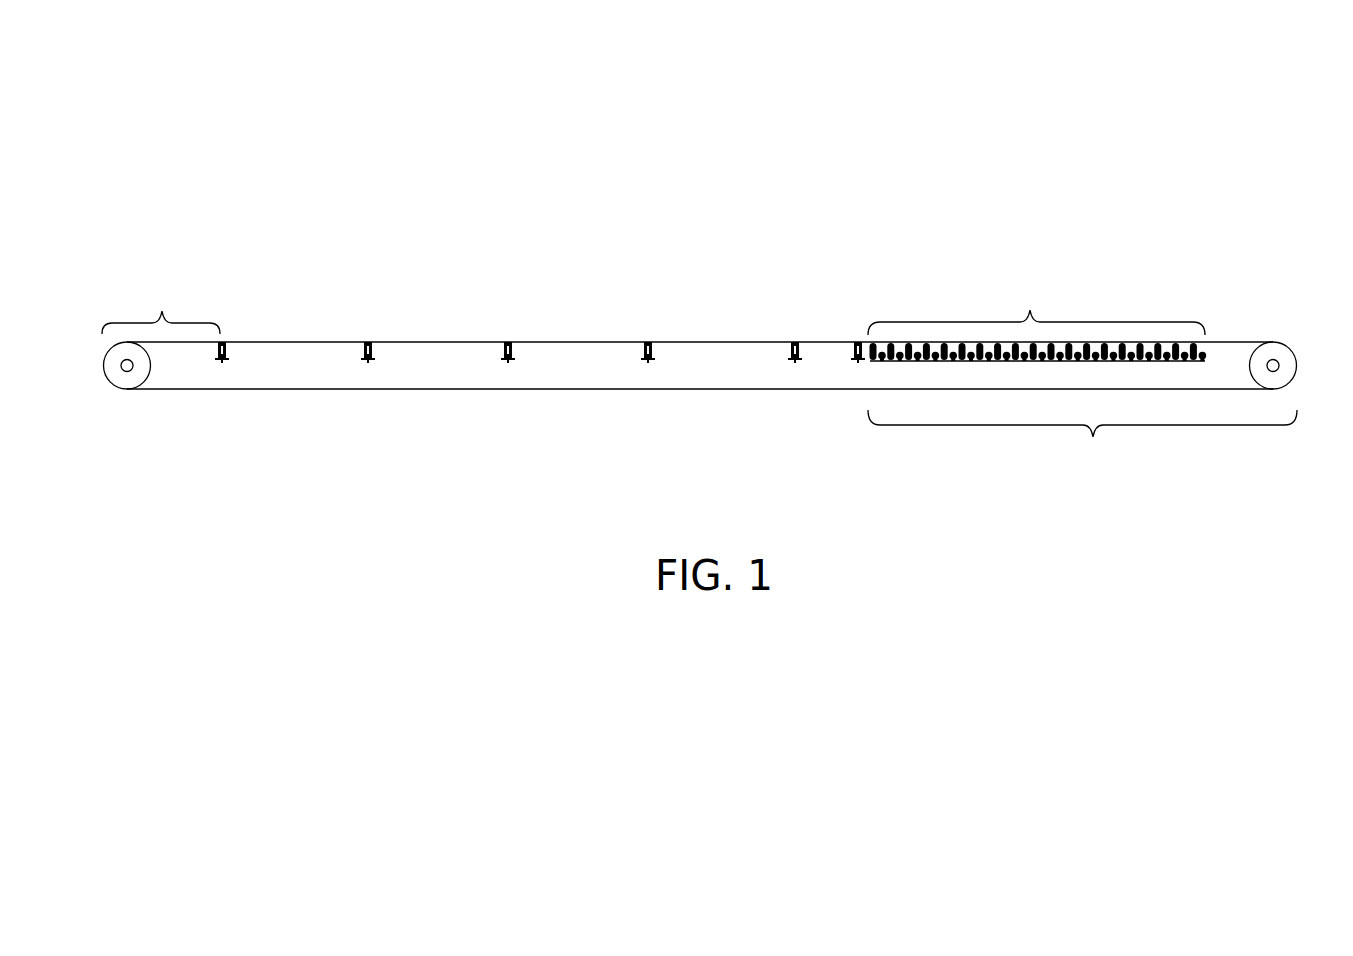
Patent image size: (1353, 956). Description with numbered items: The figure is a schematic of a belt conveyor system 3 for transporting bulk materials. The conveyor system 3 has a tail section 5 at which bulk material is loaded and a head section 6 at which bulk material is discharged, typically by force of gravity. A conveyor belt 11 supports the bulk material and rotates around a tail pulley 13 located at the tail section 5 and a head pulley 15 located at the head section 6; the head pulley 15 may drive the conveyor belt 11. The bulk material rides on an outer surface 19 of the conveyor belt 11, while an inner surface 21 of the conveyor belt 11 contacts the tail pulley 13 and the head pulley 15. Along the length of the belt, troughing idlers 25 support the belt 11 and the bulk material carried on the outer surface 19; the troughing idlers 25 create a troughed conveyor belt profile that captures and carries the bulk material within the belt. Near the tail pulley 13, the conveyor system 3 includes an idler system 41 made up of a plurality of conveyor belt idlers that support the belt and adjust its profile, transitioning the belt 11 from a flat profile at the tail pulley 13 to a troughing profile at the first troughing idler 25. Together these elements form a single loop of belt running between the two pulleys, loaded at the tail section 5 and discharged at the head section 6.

The belt conveyor system 3 is at (560, 240).
The tail section 5 is at (1082, 439).
The head section 6 is at (161, 307).
The conveyor belt 11 is at (710, 326).
The tail pulley 13 is at (1283, 377).
The head pulley 15 is at (133, 378).
The outer surface 19 is at (1222, 340).
The inner surface 21 is at (172, 342).
The troughing idlers 25 is at (222, 362).
The idler system 41 is at (1037, 320).